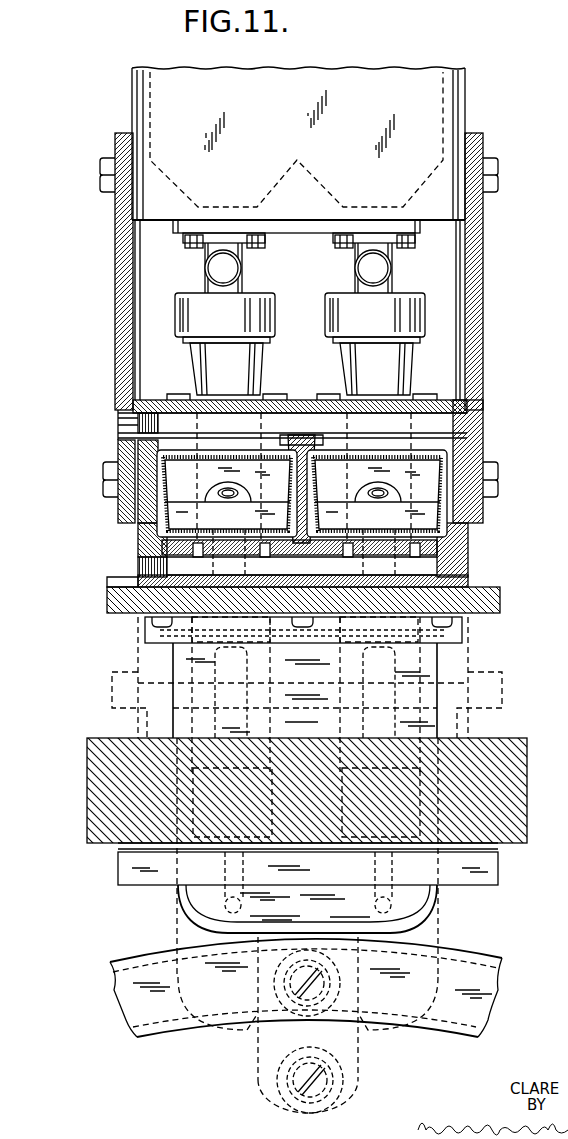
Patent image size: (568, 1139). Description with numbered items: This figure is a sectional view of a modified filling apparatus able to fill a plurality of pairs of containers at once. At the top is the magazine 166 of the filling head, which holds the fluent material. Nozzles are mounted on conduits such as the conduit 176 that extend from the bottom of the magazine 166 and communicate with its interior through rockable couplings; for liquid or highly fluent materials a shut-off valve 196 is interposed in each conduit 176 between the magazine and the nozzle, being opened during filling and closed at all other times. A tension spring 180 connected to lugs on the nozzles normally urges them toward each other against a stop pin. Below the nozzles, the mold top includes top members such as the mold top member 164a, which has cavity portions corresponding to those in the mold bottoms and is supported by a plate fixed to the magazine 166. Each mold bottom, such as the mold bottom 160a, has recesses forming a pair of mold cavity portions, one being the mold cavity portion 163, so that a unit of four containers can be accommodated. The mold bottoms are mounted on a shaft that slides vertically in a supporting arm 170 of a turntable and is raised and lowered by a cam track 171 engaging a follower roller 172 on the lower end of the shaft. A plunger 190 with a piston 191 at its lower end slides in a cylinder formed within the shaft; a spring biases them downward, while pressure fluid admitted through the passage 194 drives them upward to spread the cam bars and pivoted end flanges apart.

The magazine 166 is at (360, 72).
The shut-off valve 196 is at (237, 268).
The conduit 176 is at (240, 287).
The tension spring 180 is at (173, 399).
The mold top member 164a is at (303, 399).
The mold cavity portion 163 is at (197, 494).
The plunger 190 is at (232, 514).
The mold bottom 160a is at (445, 578).
The supporting arm 170 is at (92, 802).
The piston 191 is at (308, 864).
The passage 194 is at (243, 905).
The cam track 171 is at (135, 998).
The follower roller 172 is at (280, 987).